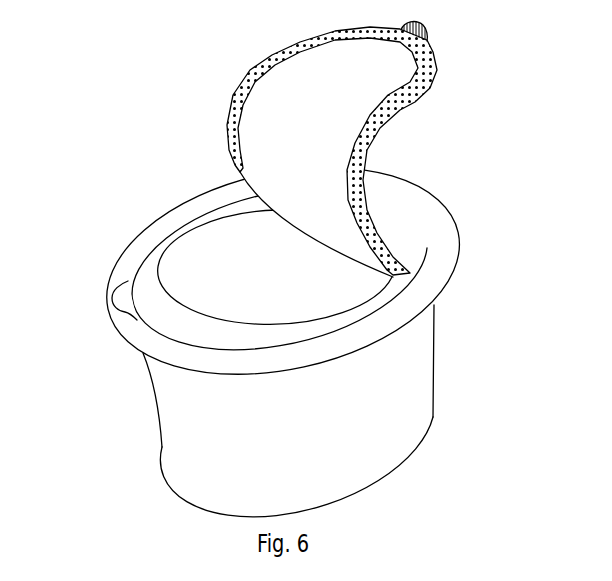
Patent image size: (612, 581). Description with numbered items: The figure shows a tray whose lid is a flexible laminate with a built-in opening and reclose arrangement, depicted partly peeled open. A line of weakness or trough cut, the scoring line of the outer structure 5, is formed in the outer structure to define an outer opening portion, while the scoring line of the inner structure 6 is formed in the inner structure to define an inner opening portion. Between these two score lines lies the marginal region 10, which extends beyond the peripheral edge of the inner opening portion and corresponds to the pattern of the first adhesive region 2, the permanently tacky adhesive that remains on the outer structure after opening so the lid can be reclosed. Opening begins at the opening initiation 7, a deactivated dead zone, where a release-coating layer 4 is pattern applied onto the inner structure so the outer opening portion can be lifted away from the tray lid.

The first adhesive region 2 is at (247, 70).
The release-coating layer 4 is at (428, 32).
The scoring line of the outer structure 5 is at (150, 250).
The scoring line of the inner structure 6 is at (192, 235).
The opening initiation 7 is at (118, 302).
The marginal region 10 is at (367, 300).